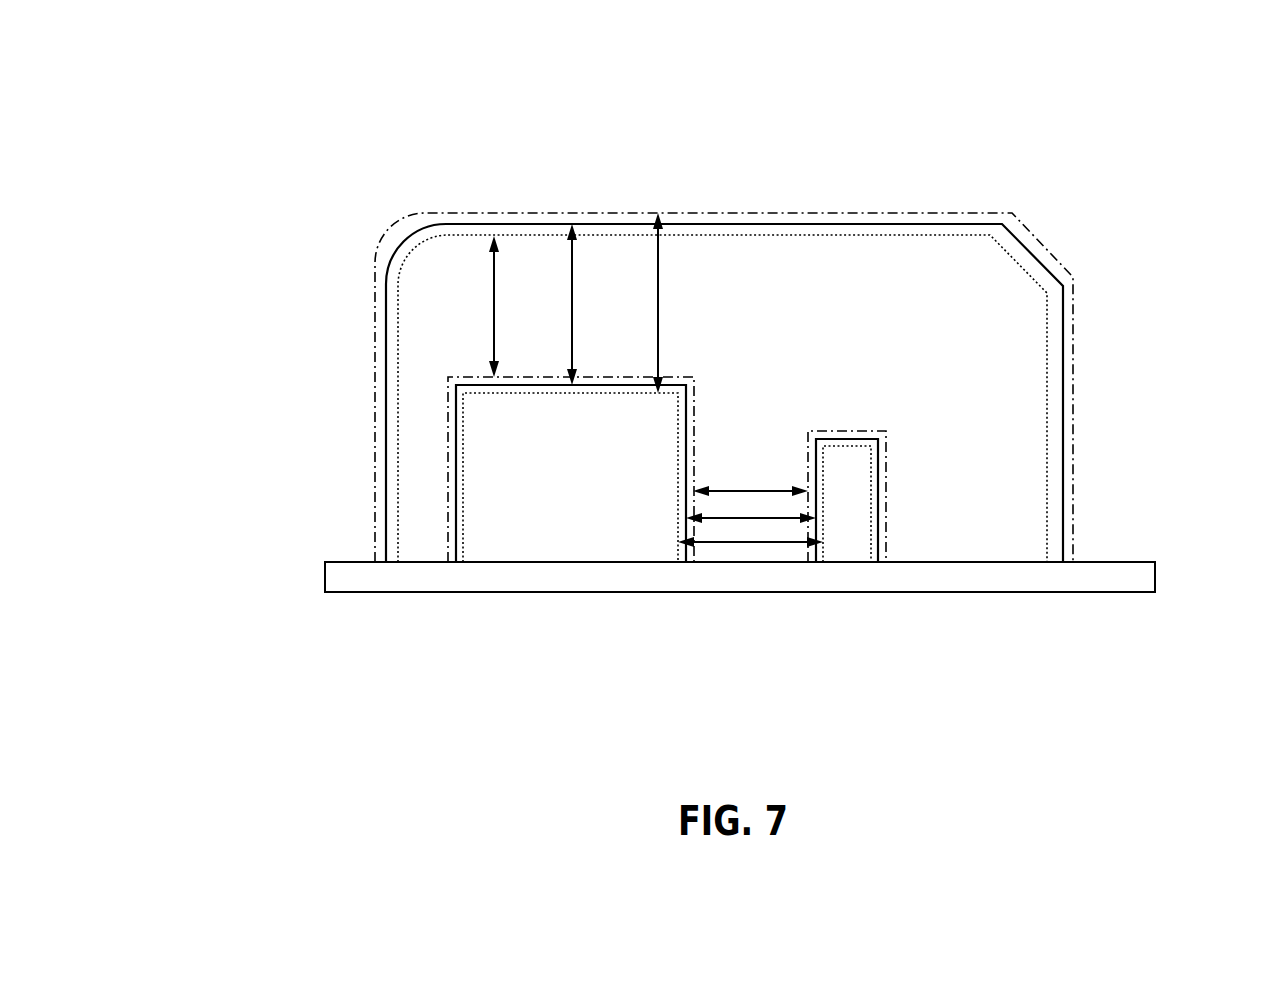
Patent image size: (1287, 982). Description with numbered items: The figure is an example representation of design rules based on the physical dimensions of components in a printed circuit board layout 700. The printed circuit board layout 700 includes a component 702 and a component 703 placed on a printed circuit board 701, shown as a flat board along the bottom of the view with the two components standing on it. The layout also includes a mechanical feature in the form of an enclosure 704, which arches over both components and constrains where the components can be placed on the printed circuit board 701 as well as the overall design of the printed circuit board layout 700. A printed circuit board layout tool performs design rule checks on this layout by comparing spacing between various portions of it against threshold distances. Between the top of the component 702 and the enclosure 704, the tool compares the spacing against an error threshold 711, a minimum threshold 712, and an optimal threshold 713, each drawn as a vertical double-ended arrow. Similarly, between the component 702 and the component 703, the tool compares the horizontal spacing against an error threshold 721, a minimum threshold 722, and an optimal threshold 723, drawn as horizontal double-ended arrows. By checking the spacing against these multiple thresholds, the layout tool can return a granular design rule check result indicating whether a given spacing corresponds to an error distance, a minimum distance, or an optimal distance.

The printed circuit board layout 700 is at (1082, 105).
The printed circuit board 701 is at (340, 592).
The component 702 is at (571, 469).
The component 703 is at (970, 625).
The enclosure 704 is at (1033, 250).
The error threshold 711 is at (494, 325).
The minimum threshold 712 is at (572, 262).
The optimal threshold 713 is at (658, 262).
The error threshold 721 is at (745, 490).
The minimum threshold 722 is at (797, 520).
The optimal threshold 723 is at (726, 543).